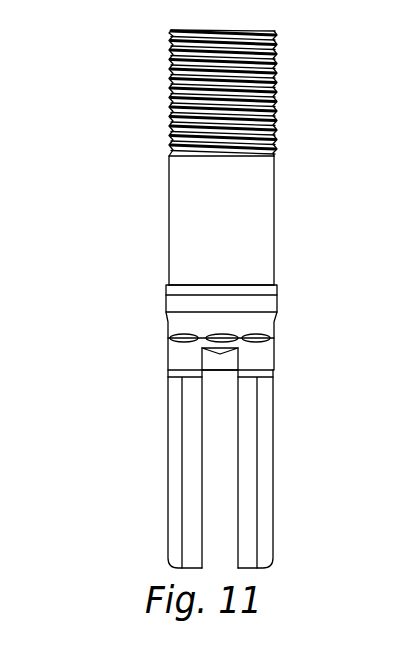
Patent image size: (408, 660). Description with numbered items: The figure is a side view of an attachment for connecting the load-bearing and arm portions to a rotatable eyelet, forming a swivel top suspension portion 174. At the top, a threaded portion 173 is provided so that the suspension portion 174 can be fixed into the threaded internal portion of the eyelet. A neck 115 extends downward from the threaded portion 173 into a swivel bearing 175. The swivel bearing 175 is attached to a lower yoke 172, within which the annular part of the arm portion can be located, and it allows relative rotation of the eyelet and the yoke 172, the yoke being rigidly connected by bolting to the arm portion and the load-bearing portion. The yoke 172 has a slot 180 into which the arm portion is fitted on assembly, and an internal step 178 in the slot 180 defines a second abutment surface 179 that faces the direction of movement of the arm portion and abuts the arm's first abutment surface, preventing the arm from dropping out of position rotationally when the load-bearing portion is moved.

The threaded portion 173 is at (277, 82).
The suspension portion 174 is at (241, 175).
The neck 115 is at (242, 217).
The swivel bearing 175 is at (243, 296).
The second abutment surface 179 is at (224, 360).
The internal step 178 is at (221, 360).
The lower yoke 172 is at (258, 464).
The slot 180 is at (227, 468).